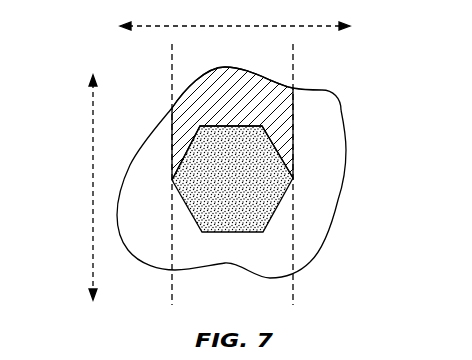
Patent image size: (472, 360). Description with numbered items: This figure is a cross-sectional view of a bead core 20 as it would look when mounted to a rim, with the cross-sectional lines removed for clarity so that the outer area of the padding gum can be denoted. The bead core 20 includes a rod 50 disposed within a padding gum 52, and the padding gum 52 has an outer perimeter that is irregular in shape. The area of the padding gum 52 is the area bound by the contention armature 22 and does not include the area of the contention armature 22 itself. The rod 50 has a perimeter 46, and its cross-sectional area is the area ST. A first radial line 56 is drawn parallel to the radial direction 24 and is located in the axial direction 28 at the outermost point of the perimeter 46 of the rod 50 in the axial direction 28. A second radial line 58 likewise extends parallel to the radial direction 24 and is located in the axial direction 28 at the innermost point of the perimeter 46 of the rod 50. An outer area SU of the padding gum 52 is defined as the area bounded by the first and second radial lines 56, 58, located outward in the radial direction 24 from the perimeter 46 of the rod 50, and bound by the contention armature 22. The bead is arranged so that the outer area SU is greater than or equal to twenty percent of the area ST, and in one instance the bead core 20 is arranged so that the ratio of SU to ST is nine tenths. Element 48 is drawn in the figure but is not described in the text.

The bead core 20 is at (145, 233).
The contention armature 22 is at (323, 237).
The radial direction 24 is at (92, 188).
The axial direction 28 is at (236, 26).
The perimeter 46 is at (270, 227).
The upper surface layer 48 is at (232, 67).
The rod 50 is at (263, 187).
The padding gum 52 is at (323, 121).
The first radial line 56 is at (170, 63).
The second radial line 58 is at (295, 72).
The outer area SU is at (190, 100).
The area ST is at (268, 163).